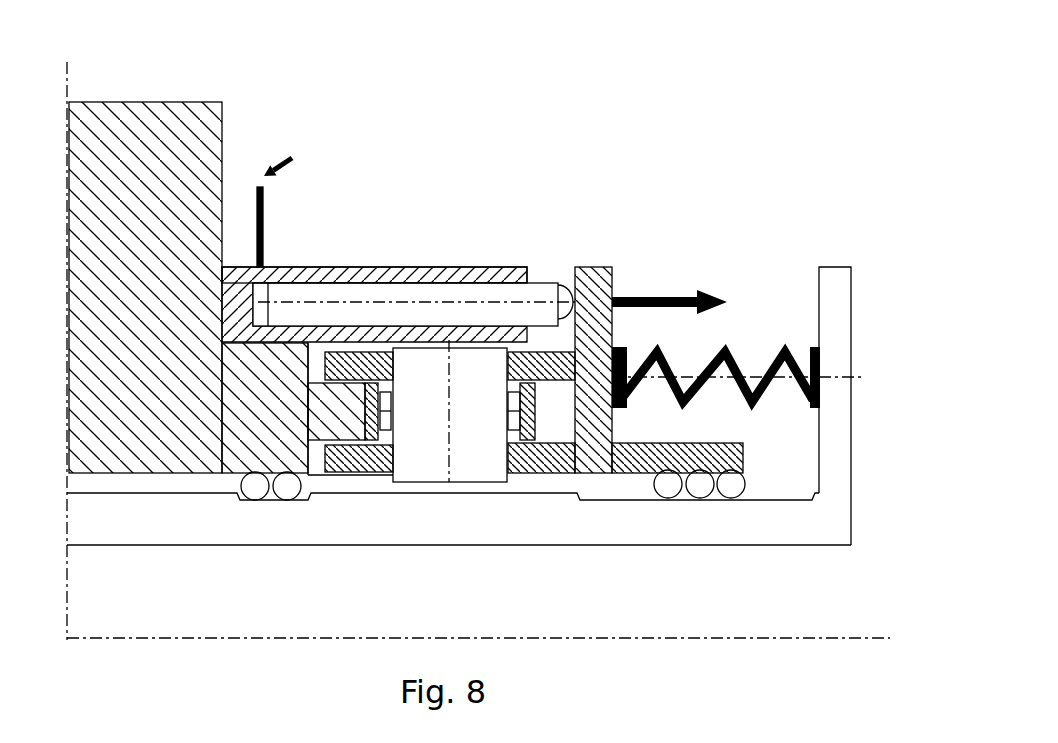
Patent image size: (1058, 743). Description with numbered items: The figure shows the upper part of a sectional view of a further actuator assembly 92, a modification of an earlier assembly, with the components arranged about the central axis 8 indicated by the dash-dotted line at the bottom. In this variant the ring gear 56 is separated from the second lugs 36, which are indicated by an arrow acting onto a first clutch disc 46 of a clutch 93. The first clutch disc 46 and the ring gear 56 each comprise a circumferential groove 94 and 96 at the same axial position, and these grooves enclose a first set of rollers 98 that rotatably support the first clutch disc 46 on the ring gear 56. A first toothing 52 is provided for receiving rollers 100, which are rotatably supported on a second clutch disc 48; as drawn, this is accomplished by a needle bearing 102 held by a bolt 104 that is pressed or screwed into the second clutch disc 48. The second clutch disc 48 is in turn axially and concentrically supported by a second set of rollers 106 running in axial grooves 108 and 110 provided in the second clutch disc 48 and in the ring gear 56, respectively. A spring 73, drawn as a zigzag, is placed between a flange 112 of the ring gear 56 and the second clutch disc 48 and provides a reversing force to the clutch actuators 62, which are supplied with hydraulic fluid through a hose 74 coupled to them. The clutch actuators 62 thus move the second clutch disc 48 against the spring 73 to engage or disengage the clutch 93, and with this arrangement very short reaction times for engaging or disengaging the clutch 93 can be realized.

The central axis 8 is at (882, 637).
The second lugs 36 is at (243, 110).
The first clutch disc 46 is at (203, 167).
The second clutch disc 48 is at (563, 342).
The first toothing 52 is at (317, 372).
The ring gear 56 is at (188, 528).
The clutch actuators 62 is at (472, 295).
The spring 73 is at (818, 355).
The hose 74 is at (265, 215).
The further actuator assembly 92 is at (567, 120).
The clutch 93 is at (612, 283).
The circumferential groove 94 is at (265, 470).
The circumferential groove 96 is at (268, 497).
The first set of rollers 98 is at (307, 498).
The rollers 100 is at (525, 473).
The needle bearing 102 is at (513, 473).
The bolt 104 is at (432, 463).
The second set of rollers 106 is at (730, 485).
The axial groove 108 is at (688, 443).
The axial groove 110 is at (648, 493).
The flange 112 is at (833, 427).